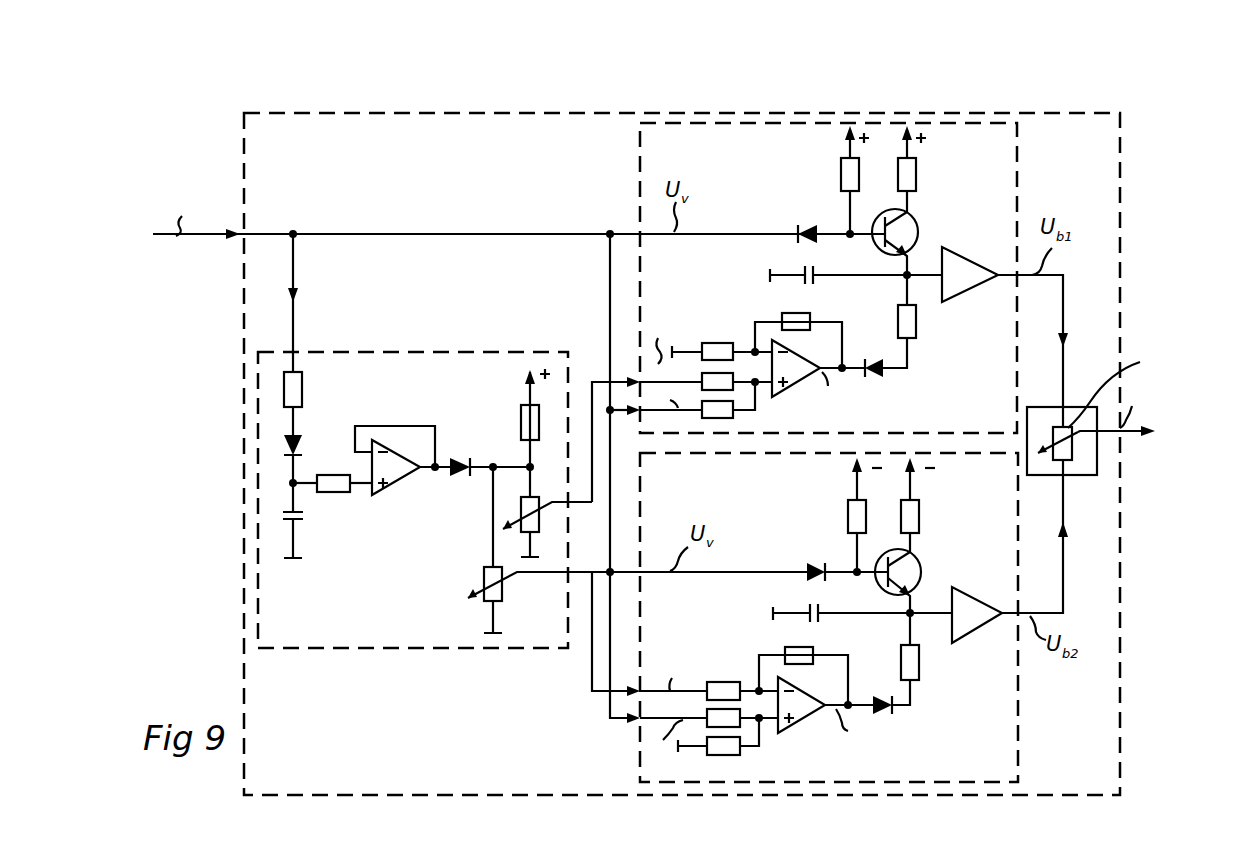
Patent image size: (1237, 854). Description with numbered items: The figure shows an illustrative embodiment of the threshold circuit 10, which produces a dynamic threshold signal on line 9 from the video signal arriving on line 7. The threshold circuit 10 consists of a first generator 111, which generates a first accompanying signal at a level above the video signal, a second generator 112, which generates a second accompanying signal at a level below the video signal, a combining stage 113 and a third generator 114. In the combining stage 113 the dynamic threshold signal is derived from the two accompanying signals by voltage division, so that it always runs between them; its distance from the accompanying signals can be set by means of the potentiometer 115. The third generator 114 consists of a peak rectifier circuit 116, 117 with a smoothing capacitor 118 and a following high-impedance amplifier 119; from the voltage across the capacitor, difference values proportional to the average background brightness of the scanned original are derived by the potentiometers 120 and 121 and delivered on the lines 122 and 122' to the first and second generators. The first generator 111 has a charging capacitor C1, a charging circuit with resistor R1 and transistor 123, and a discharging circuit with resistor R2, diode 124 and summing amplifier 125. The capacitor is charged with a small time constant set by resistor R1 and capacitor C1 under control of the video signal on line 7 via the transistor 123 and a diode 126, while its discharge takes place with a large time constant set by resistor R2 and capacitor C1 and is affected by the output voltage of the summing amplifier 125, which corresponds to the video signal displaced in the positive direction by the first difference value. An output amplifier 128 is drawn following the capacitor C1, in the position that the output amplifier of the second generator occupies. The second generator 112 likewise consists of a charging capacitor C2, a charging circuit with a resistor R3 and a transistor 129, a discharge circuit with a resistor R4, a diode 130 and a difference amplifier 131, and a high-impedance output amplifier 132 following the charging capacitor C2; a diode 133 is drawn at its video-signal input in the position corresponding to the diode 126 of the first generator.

The line 7 is at (221, 236).
The line 9 is at (1125, 432).
The threshold circuit 10 is at (258, 704).
The first generator 111 is at (1000, 172).
The second generator 112 is at (998, 746).
The combining stage 113 is at (1034, 471).
The third generator 114 is at (368, 648).
The potentiometer 115 is at (1078, 458).
The peak rectifier circuit 116 is at (303, 381).
The peak rectifier circuit 117 is at (300, 444).
The smoothing capacitor 118 is at (305, 517).
The high-impedance amplifier 119 is at (408, 474).
The potentiometer 120 is at (528, 499).
The potentiometer 121 is at (484, 581).
The line 122 is at (601, 409).
The line 122' is at (585, 635).
The transistor 123 is at (914, 229).
The diode 124 is at (870, 360).
The summing amplifier 125 is at (788, 390).
The diode 126 is at (811, 220).
The amplifier 128 is at (971, 262).
The transistor 129 is at (920, 568).
The diode 130 is at (886, 712).
The difference amplifier 131 is at (796, 727).
The high-impedance output amplifier 132 is at (984, 609).
The diode 133 is at (816, 562).
The resistor R1 is at (916, 174).
The resistor R2 is at (916, 322).
The resistor R3 is at (919, 520).
The resistor R4 is at (919, 663).
The charging capacitor C1 is at (801, 272).
The charging capacitor C2 is at (806, 611).